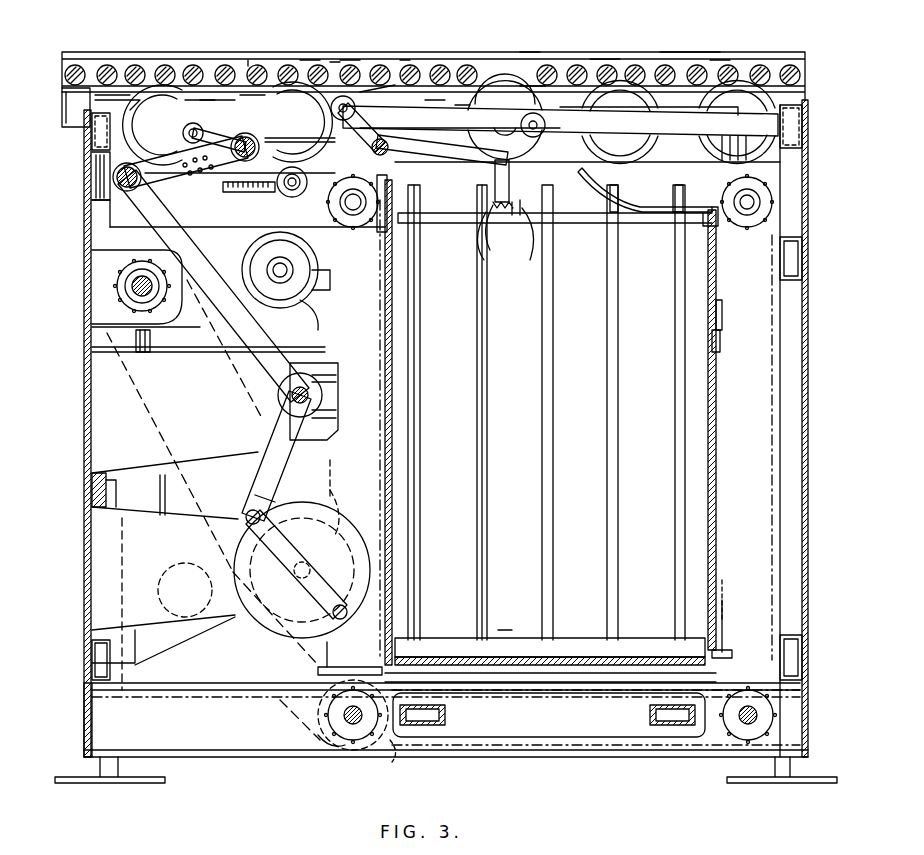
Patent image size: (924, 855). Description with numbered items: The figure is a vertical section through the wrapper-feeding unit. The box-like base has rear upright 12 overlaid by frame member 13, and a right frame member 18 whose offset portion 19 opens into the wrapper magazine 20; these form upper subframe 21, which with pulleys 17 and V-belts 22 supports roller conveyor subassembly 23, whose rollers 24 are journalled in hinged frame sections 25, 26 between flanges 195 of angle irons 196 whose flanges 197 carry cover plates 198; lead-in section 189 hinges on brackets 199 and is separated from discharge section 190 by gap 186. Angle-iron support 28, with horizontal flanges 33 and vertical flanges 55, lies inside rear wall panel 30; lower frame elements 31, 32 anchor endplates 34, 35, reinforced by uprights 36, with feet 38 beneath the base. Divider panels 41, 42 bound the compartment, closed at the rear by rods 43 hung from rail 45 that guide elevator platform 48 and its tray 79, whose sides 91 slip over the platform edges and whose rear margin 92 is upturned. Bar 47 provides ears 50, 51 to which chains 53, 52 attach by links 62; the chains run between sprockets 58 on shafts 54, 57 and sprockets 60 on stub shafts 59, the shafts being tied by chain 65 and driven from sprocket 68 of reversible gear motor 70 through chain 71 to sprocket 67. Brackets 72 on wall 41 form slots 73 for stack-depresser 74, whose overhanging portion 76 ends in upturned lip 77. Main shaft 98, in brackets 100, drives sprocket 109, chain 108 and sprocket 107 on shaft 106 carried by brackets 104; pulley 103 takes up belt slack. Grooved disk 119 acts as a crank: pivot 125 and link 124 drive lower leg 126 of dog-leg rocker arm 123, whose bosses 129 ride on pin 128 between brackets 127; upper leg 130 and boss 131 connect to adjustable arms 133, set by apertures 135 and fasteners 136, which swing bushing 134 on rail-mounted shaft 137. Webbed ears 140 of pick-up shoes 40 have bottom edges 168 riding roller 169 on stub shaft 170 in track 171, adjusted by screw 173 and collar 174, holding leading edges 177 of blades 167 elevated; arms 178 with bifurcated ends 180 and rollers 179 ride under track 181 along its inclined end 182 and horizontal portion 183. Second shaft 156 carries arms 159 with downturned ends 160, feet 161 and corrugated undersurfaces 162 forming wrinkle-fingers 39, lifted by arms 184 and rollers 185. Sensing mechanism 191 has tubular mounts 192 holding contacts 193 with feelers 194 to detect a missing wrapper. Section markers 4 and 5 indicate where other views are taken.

The section line 4- 4 is at (503, 625).
The section line 5- 5 is at (333, 62).
The rear upright 12 is at (92, 506).
The upper horizontal frame member 13 is at (92, 160).
The V-belt pulleys 17 is at (95, 130).
The upper horizontal frame member 18 is at (786, 126).
The downwardly offset portion 19 is at (795, 256).
The wrapper magazine 20 is at (563, 440).
The upper subframe 21 is at (126, 92).
The V-belts 22 is at (530, 50).
The roller conveyor subassembly 23 is at (598, 46).
The rollers 24 is at (405, 64).
The hinged frame section 25 is at (346, 64).
The hinged frame section 26 is at (718, 66).
The angle-iron support 28 is at (268, 756).
The rear wall panel 30 is at (438, 412).
The lower horizontal frame element 31 is at (92, 652).
The lower horizontal frame element 32 is at (795, 623).
The horizontal flanges 33 is at (226, 694).
The left endplate 34 is at (92, 470).
The right endplate 35 is at (806, 592).
The uprights 36 is at (790, 392).
The foot 38 is at (112, 778).
The wrinkle-fingers 39 is at (516, 192).
The pick-up shoes 40 is at (350, 215).
The right vertical divider panel 41 is at (716, 577).
The left vertical divider panel 42 is at (395, 532).
The vertical rods 43 is at (498, 372).
The rail 45 is at (560, 132).
The bar 47 is at (612, 710).
The elevator platform 48 is at (628, 648).
The ears 50 is at (386, 652).
The ears 51 is at (731, 650).
The chains 52 is at (726, 600).
The chains 53 is at (330, 470).
The shaft 54 is at (350, 737).
The vertical flanges 55 is at (318, 746).
The second shaft 57 is at (760, 712).
The sprocket gears 58 is at (360, 738).
The stub shafts 59 is at (353, 212).
The sprockets 60 is at (376, 226).
The attaching link 62 is at (318, 657).
The chain 65 is at (630, 756).
The sprocket 67 is at (400, 758).
The sprocket 68 is at (175, 570).
The reversible gear motor 70 is at (290, 302).
The sprocket chain 71 is at (295, 714).
The brackets 72 is at (722, 346).
The slots 73 is at (716, 332).
The stack-depresser 74 is at (666, 226).
The overhanging portion 76 is at (676, 190).
The upwardly curving end 77 is at (590, 176).
The tray 79 is at (568, 642).
The tray rail 91 is at (402, 652).
The rear margin 92 is at (498, 640).
The main transverse shaft 98 is at (92, 355).
The brackets 100 is at (130, 300).
The V-belt pulley 103 is at (318, 284).
The brackets 104 is at (92, 578).
The shaft 106 is at (300, 545).
The sprocket 107 is at (332, 500).
The chain 108 is at (186, 432).
The sprocket 109 is at (140, 336).
The peripherally-grooved disk 119 is at (352, 530).
The dog-leg rocker arm 123 is at (270, 446).
The link 124 is at (318, 572).
The pivot element 125 is at (312, 602).
The lower leg 126 is at (262, 472).
The brackets 127 is at (238, 320).
The pivot pin 128 is at (330, 365).
The bosses 129 is at (296, 378).
The upper leg 130 is at (238, 342).
The boss 131 is at (113, 177).
The adjustable arms 133 is at (165, 190).
The bushing 134 is at (256, 145).
The apertures 135 is at (142, 108).
The fasteners 136 is at (205, 190).
The rail-mounted shaft 137 is at (285, 196).
The webbed ears 140 is at (236, 121).
The second rail-mounted shaft 156 is at (386, 151).
The bifurcated arms 159 is at (462, 166).
The downturned ends 160 is at (510, 206).
The friction feet 161 is at (486, 212).
The corrugated arcuate undersurfaces 162 is at (522, 208).
The blades 167 is at (276, 117).
The bottom edge 168 is at (400, 128).
The roller 169 is at (292, 189).
The stub shaft 170 is at (280, 246).
The channel-shaped track 171 is at (362, 118).
The adjusting screws 173 is at (243, 193).
The collar 174 is at (96, 192).
The leading edges 177 is at (386, 180).
The rearwardly-extending arms 178 is at (208, 100).
The rollers 179 is at (198, 112).
The bifurcated end portions 180 is at (142, 100).
The overhanging track 181 is at (462, 105).
The inclined end 182 is at (434, 100).
The horizontal portion 183 is at (492, 86).
The rearwardly-extending arms 184 is at (375, 90).
The rollers 185 is at (356, 100).
The gap 186 is at (528, 78).
The lead-in section 189 is at (250, 68).
The discharge section 190 is at (682, 58).
The wrapper pick-up sensing mechanism 191 is at (622, 130).
The tubular mounts 192 is at (752, 120).
The contact 193 is at (545, 138).
The roller-type feeler 194 is at (478, 141).
The downturned flanges 195 is at (626, 66).
The angle-iron roller frame elements 196 is at (100, 68).
The horizontal flanges 197 is at (250, 95).
The cover plates 198 is at (302, 62).
The hinge brackets 199 is at (62, 92).